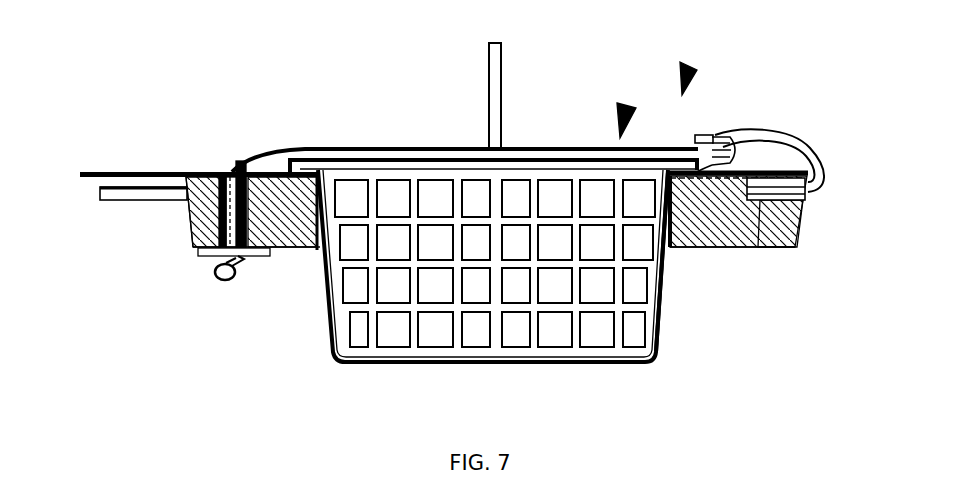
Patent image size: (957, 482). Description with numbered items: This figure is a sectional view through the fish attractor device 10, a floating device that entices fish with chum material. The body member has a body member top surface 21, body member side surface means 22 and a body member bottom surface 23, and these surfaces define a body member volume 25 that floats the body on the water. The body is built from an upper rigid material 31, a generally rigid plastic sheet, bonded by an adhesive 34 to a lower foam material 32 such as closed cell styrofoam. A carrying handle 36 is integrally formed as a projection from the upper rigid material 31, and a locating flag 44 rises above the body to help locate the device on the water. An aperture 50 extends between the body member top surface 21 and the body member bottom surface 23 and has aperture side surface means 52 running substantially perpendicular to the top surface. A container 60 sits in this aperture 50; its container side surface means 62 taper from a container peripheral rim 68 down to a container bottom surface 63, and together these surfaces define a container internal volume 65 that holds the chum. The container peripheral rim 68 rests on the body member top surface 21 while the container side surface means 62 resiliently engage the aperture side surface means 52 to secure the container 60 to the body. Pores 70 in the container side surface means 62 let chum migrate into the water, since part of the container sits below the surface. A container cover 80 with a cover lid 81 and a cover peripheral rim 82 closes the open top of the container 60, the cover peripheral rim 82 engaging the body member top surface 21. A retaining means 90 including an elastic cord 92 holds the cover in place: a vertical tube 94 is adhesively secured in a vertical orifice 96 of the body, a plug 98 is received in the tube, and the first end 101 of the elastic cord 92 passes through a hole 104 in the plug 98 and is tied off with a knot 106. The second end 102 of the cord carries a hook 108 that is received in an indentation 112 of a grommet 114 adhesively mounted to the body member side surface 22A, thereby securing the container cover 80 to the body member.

The fish attractor device 10 is at (690, 62).
The body member top surface 21 is at (216, 170).
The body member side surface means 22 is at (187, 230).
The body member side surface 22A is at (800, 232).
The body member bottom surface 23 is at (712, 248).
The body member volume 25 is at (780, 232).
The upper rigid material 31 is at (192, 172).
The lower foam material 32 is at (198, 250).
The adhesive 34 is at (95, 192).
The carrying handle 36 is at (83, 172).
The locating flag 44 is at (502, 72).
The aperture 50 is at (306, 250).
The aperture side surface means 52 is at (318, 255).
The container 60 is at (515, 294).
The container side surface means 62 is at (664, 308).
The container bottom surface 63 is at (577, 362).
The container internal volume 65 is at (400, 322).
The container peripheral rim 68 is at (307, 168).
The pores 70 is at (528, 320).
The container cover 80 is at (547, 150).
The cover lid 81 is at (387, 158).
The cover peripheral rim 82 is at (713, 143).
The retaining means 90 is at (636, 106).
The elastic cord 92 is at (457, 158).
The vertical tube 94 is at (281, 250).
The vertical orifice 96 is at (183, 212).
The plug 98 is at (236, 165).
The first end 101 is at (246, 276).
The second end 102 is at (707, 135).
The hole 104 is at (221, 170).
The knot 106 is at (214, 278).
The hook 108 is at (790, 136).
The indentation 112 is at (805, 192).
The grommet 114 is at (757, 248).